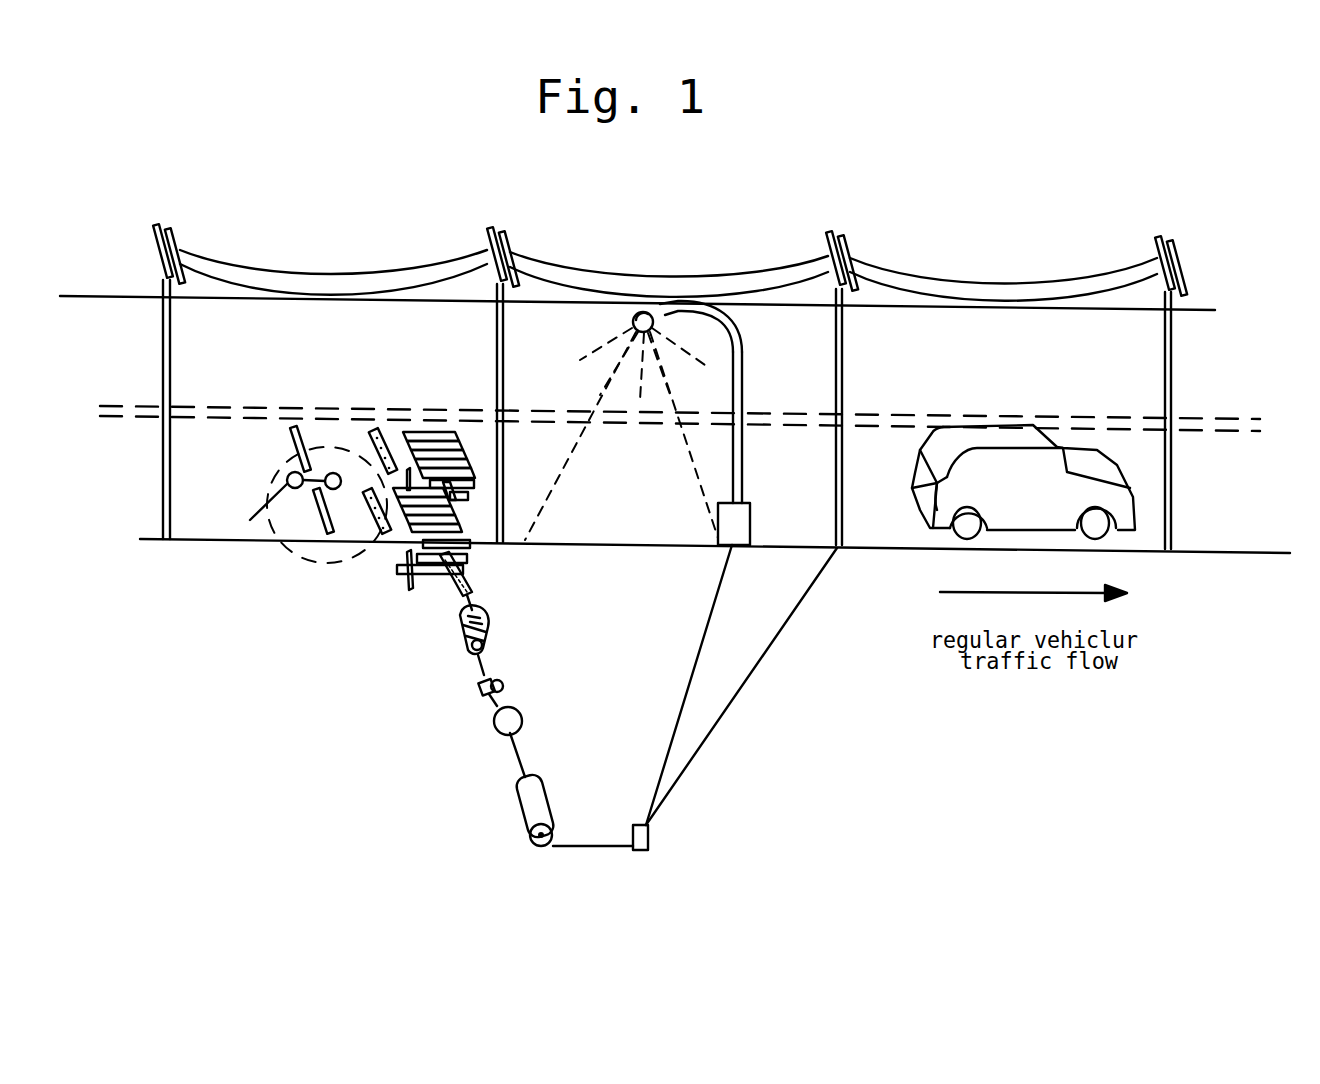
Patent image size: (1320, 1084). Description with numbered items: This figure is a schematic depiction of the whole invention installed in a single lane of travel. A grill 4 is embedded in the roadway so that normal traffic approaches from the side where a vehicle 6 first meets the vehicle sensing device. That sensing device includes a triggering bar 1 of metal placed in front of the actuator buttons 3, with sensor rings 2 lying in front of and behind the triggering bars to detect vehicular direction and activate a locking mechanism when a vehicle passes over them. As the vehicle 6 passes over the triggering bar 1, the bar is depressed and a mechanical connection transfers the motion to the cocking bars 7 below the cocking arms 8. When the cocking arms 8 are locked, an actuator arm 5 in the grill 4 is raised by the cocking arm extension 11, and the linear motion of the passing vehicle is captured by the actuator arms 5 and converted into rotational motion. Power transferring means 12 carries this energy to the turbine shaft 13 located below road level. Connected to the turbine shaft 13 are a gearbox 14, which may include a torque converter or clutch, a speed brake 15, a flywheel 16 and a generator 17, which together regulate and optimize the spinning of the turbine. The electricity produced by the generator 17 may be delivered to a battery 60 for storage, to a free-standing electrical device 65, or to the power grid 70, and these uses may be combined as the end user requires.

The triggering bar 1 is at (297, 425).
The sensor rings 2 is at (340, 470).
The actuator buttons 3 is at (380, 428).
The grill 4 is at (432, 432).
The actuator arms 5 is at (475, 484).
The vehicle 6 is at (1135, 530).
The cocking bars 7 is at (413, 590).
The cocking arms 8 is at (400, 560).
The cocking arm extension 11 is at (438, 590).
The power transferring means 12 is at (470, 580).
The turbine shaft 13 is at (500, 755).
The gearbox 14 is at (473, 645).
The speed brake 15 is at (485, 688).
The flywheel 16 is at (500, 740).
The generator 17 is at (522, 824).
The battery 60 is at (648, 838).
The electrical device 65 is at (750, 530).
The power grid 70 is at (858, 260).